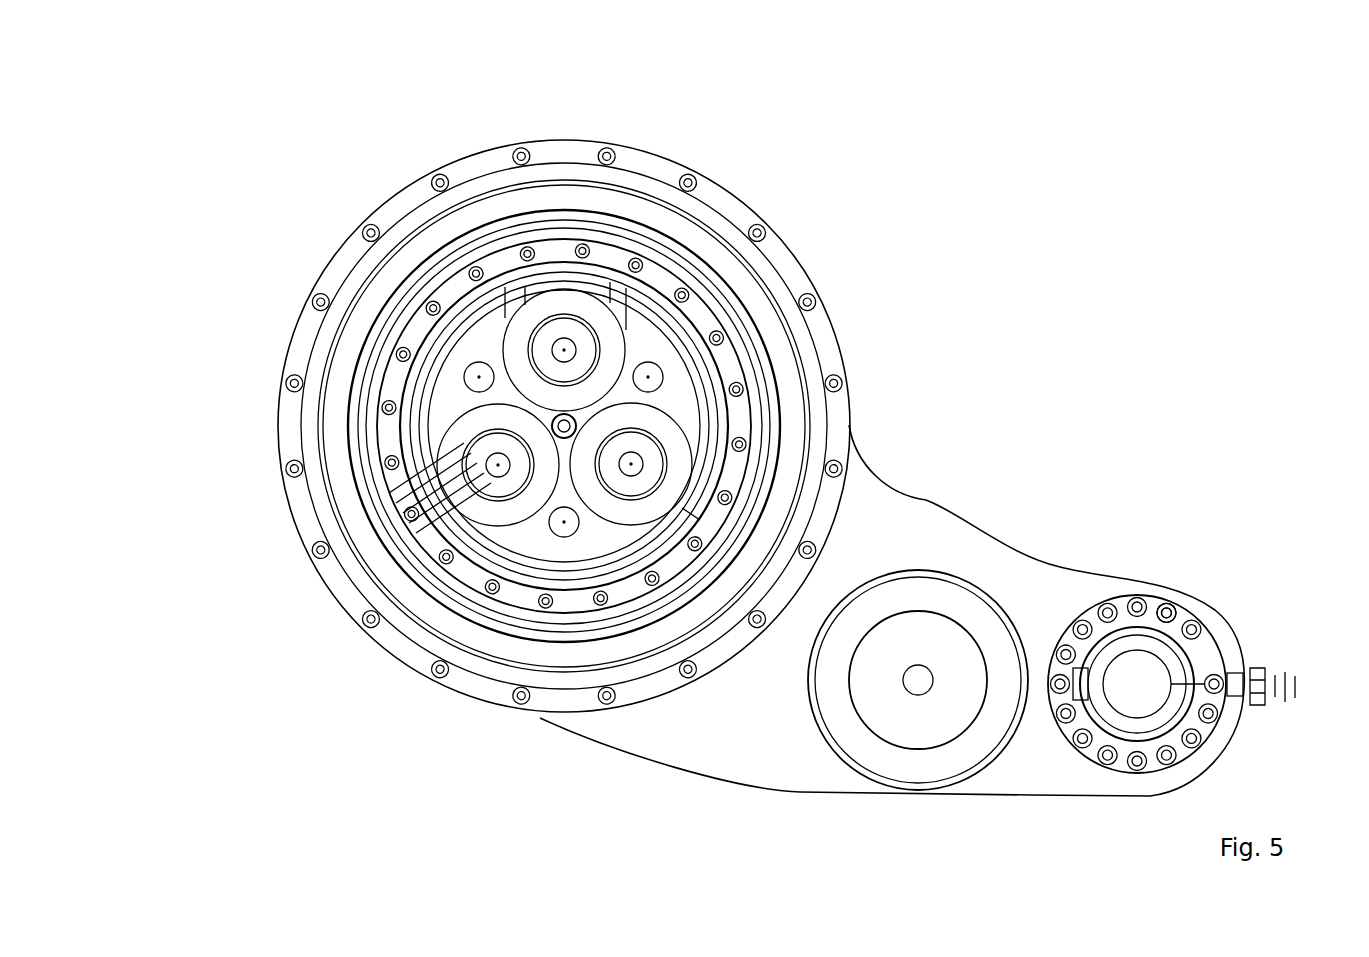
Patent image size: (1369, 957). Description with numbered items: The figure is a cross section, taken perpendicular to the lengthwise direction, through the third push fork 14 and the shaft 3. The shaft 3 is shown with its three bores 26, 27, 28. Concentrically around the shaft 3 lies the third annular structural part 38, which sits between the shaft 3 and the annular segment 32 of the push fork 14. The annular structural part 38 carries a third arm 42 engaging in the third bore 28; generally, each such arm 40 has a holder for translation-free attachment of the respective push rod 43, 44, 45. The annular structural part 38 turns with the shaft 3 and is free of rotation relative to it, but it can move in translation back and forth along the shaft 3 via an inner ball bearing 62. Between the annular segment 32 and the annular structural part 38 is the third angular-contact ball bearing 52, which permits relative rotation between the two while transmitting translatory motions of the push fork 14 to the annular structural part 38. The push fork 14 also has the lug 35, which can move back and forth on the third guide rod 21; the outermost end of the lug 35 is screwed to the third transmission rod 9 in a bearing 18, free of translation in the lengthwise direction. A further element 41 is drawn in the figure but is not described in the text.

The shaft 3 is at (647, 330).
The third transmission rod 9 is at (1188, 632).
The third push fork 14 is at (1000, 195).
The bearing 18 is at (1137, 687).
The third guide rod 21 is at (930, 642).
The bore 26 is at (537, 307).
The bore 27 is at (670, 465).
The third bore 28 is at (487, 508).
The annular segment 32 is at (392, 643).
The lug 35 is at (1037, 605).
The third annular structural part 38 is at (505, 612).
The arm 40 is at (591, 290).
The carrier arm 41 is at (682, 508).
The third arm 42 is at (478, 440).
The push rod 43 is at (575, 332).
The push rod 44 is at (643, 453).
The push rod 45 is at (477, 432).
The third angular-contact ball bearing 52 is at (555, 632).
The inner ball bearing 62 is at (603, 605).